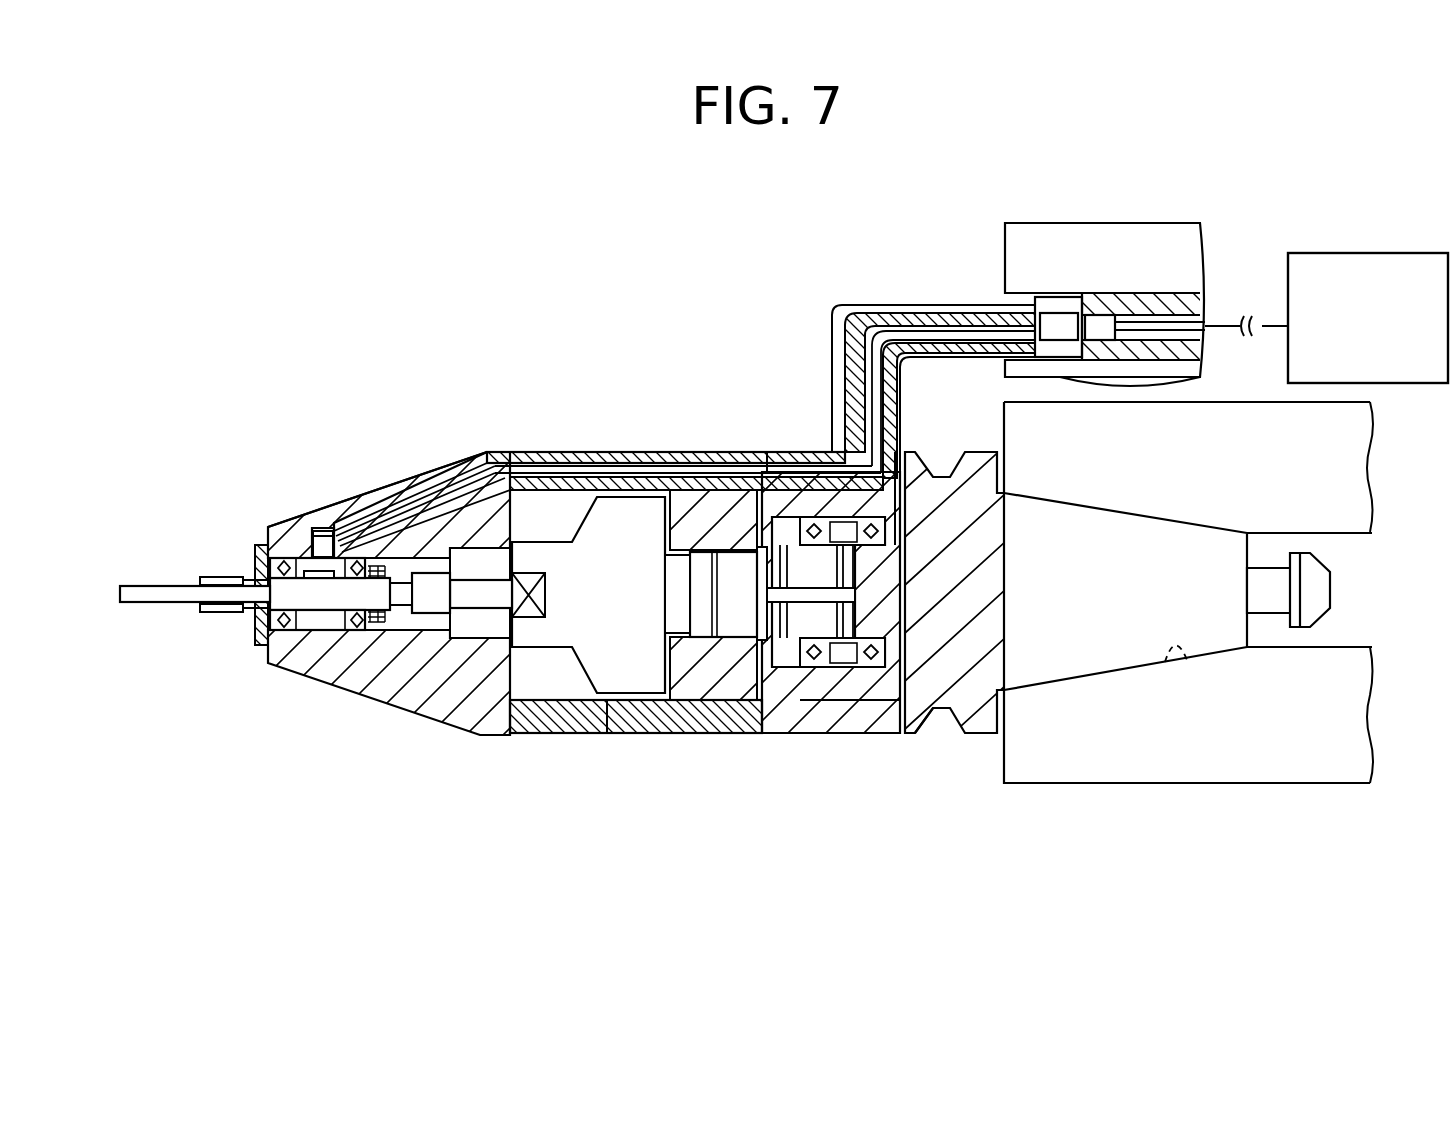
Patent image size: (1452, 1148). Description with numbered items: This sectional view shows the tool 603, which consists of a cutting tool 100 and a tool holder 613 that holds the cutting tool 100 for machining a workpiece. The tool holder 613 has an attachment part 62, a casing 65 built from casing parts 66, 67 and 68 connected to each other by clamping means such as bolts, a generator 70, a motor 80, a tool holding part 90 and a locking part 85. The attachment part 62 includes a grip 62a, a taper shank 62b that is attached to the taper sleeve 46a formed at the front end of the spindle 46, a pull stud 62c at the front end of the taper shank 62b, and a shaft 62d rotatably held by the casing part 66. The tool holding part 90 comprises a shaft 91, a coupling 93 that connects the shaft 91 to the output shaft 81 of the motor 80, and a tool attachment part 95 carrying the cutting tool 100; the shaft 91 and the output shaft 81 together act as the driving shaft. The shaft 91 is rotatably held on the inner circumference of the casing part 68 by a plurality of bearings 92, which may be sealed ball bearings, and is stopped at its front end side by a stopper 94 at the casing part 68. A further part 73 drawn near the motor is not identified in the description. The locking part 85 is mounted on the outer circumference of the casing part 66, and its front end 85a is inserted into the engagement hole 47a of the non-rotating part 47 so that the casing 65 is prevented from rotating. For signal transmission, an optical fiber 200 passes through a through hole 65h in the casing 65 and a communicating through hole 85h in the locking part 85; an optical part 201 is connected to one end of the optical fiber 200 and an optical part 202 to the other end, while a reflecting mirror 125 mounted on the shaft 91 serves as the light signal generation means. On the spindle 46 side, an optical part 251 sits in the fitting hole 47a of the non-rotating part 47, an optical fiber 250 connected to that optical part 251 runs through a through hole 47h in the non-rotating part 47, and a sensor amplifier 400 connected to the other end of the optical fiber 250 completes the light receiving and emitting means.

The spindle 46 is at (1250, 785).
The taper sleeve 46a is at (1178, 655).
The non-rotating part 47 is at (1160, 235).
The engagement hole 47a is at (1185, 372).
The through hole 47h is at (1180, 295).
The attachment part 62 is at (985, 728).
The grip 62a is at (945, 722).
The taper shank 62b is at (1080, 692).
The pull stud 62c is at (1318, 588).
The shaft 62d is at (812, 733).
The casing 65 is at (512, 860).
The through hole 65h is at (470, 458).
The casing part 66 is at (775, 700).
The casing part 67 is at (636, 735).
The casing part 68 is at (518, 720).
The generator 70 is at (722, 640).
The rear shaft with bearings 73 is at (760, 640).
The motor 80 is at (620, 660).
The output shaft 81 is at (485, 600).
The locking part 85 is at (930, 312).
The front end of the locking part 85a is at (1058, 312).
The through hole 85h is at (856, 306).
The tool holding part 90 is at (182, 668).
The shaft 91 is at (352, 607).
The bearings 92 is at (288, 630).
The coupling 93 is at (435, 605).
The stopper 94 is at (262, 645).
The tool attachment part 95 is at (230, 612).
The cutting tool 100 is at (145, 602).
The reflecting mirror 125 is at (302, 560).
The optical fiber 200 is at (650, 465).
The optical part 201 is at (322, 545).
The optical part 202 is at (1050, 315).
The optical fiber 250 is at (1265, 323).
The optical part 251 is at (1098, 322).
The sensor amplifier 400 is at (1335, 253).
The tool 603 is at (882, 948).
The tool holder 613 is at (922, 790).